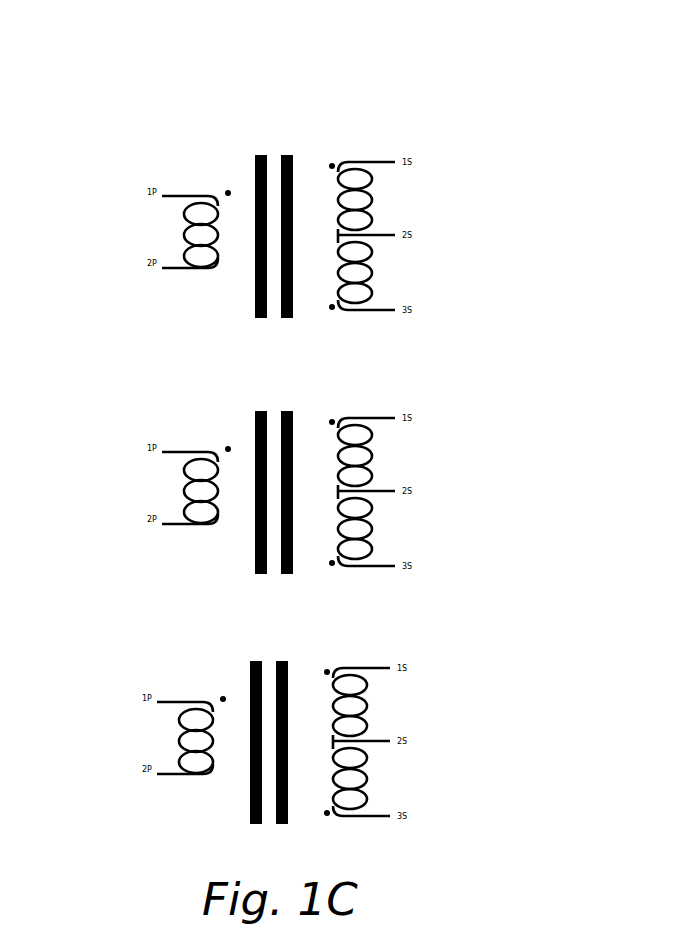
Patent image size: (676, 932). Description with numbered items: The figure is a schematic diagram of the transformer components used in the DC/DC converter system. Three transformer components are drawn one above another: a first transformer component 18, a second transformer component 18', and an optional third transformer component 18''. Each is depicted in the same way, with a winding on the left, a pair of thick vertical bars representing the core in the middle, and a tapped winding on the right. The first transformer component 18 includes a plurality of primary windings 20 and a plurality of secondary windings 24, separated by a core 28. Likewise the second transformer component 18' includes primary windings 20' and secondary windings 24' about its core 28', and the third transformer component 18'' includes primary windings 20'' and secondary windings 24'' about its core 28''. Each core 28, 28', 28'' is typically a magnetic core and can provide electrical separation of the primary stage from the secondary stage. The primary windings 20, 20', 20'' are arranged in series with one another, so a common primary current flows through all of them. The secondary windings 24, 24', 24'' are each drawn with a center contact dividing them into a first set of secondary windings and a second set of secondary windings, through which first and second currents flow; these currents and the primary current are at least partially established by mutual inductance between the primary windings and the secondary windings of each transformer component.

The first transformer component 18 is at (276, 165).
The core 28 is at (230, 200).
The primary windings 20 is at (137, 228).
The secondary windings 24 is at (415, 235).
The second transformer component 18' is at (289, 445).
The core 28' is at (231, 460).
The primary windings 20' is at (138, 484).
The secondary windings 24' is at (428, 492).
The third transformer component 18'' is at (281, 697).
The core 28'' is at (224, 710).
The primary windings 20'' is at (130, 734).
The secondary windings 24'' is at (423, 742).